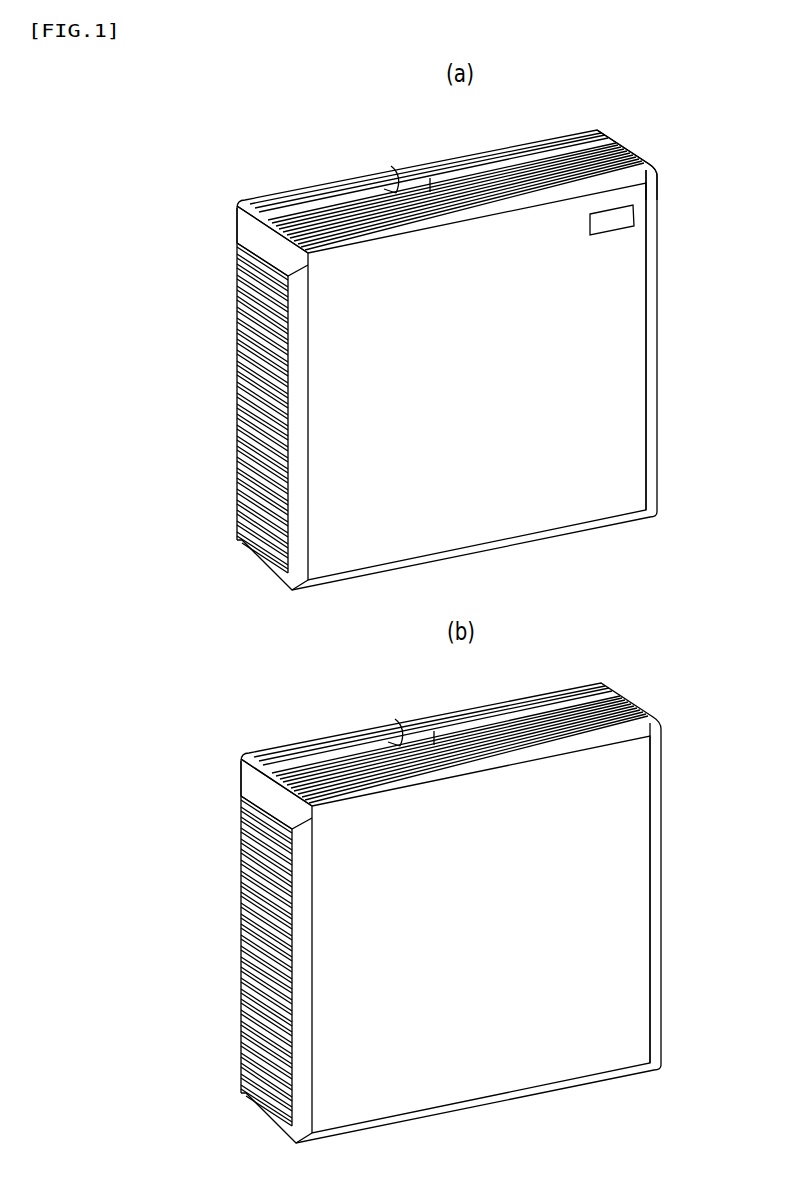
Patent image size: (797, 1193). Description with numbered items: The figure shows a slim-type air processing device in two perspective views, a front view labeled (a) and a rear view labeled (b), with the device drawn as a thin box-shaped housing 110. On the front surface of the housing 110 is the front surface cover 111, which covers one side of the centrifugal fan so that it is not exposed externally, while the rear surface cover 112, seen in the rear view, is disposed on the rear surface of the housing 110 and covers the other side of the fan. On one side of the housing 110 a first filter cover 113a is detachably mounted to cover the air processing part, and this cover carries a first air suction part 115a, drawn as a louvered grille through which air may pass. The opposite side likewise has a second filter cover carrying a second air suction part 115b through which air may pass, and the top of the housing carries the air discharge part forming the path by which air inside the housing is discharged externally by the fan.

The housing 110 is at (657, 200).
The front surface cover 111 is at (627, 330).
The rear surface cover 112 is at (405, 934).
The first filter cover 113a is at (237, 222).
The first air suction part 115a is at (237, 300).
The second air suction part 115b is at (217, 959).